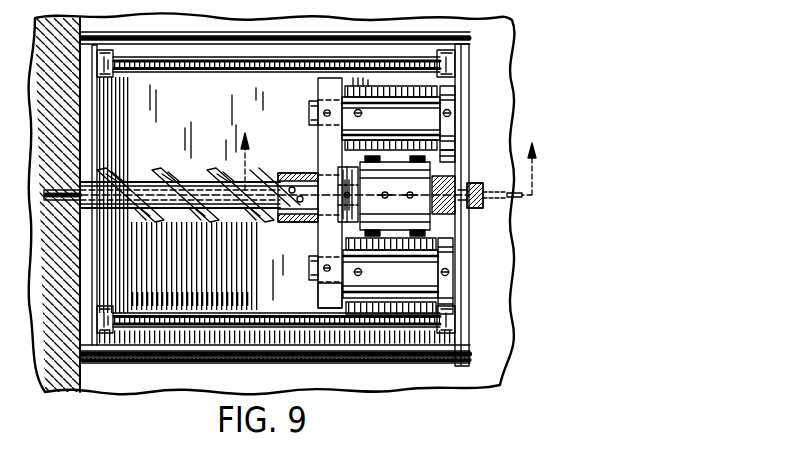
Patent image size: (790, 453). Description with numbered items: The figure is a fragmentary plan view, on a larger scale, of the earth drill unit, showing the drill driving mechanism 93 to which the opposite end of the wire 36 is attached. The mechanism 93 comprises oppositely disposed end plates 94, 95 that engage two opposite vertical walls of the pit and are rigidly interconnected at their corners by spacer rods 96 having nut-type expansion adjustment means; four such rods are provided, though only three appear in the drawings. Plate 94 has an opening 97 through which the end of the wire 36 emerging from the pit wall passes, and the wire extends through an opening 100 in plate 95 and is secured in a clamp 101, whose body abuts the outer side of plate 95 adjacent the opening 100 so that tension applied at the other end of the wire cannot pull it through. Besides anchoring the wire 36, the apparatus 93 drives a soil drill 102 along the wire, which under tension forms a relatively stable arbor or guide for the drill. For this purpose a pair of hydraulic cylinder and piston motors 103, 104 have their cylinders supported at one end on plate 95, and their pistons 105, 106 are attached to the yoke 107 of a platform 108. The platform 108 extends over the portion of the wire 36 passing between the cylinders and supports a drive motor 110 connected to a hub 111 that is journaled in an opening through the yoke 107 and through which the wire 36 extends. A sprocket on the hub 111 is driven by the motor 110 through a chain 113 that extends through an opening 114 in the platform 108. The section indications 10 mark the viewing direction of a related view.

The section line / viewing direction arrows 10 is at (388, 155).
The wire 36 is at (70, 192).
The drill driving mechanism 93 is at (314, 138).
The end plate 94 is at (96, 110).
The end plate 95 is at (466, 103).
The spacer rods 96 is at (235, 72).
The opening 97 is at (191, 192).
The opening 100 is at (463, 188).
The clamp 101 is at (478, 209).
The soil drill 102 is at (196, 160).
The hydraulic cylinder and piston motor 103 is at (412, 126).
The hydraulic cylinder and piston motor 104 is at (407, 288).
The piston 105 is at (315, 111).
The piston 106 is at (313, 285).
The yoke 107 is at (313, 262).
The platform 108 is at (407, 156).
The drive motor 110 is at (407, 191).
The hub 111 is at (292, 172).
The chain 113 is at (345, 216).
The opening 114 is at (347, 167).